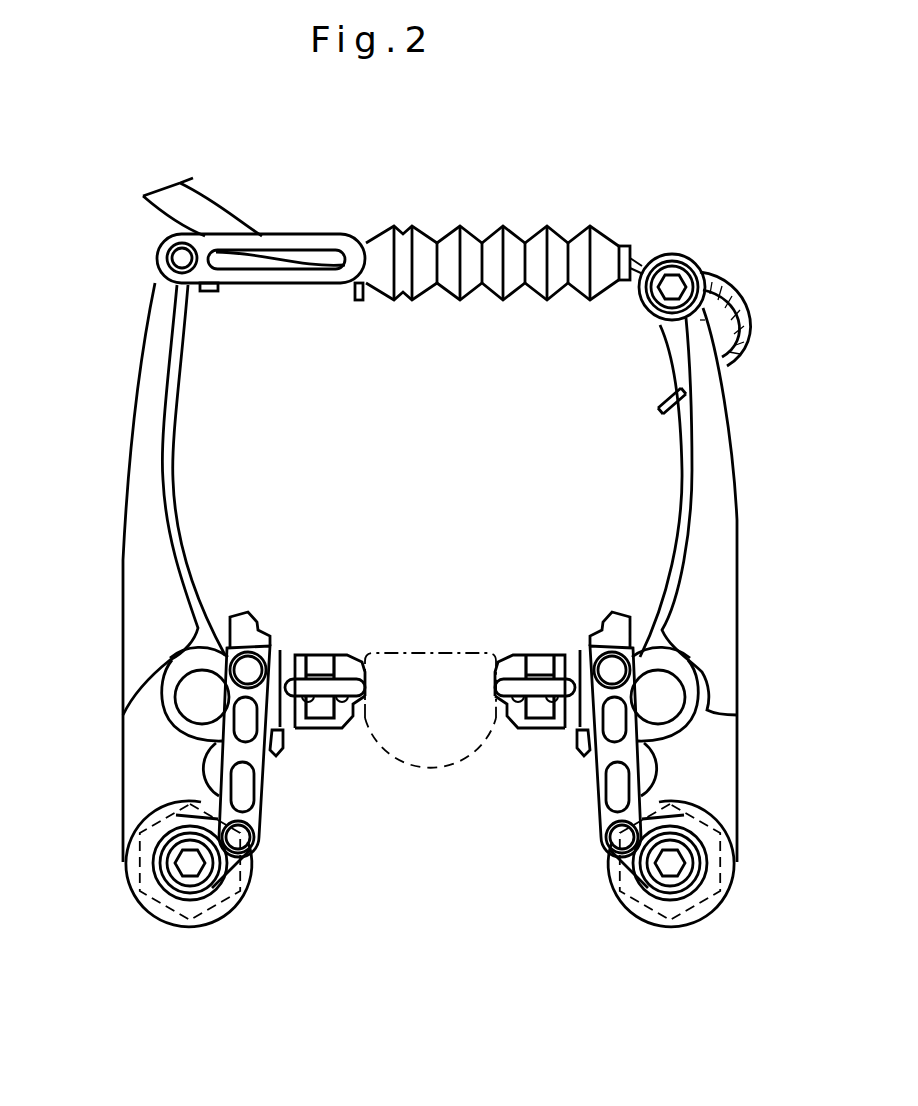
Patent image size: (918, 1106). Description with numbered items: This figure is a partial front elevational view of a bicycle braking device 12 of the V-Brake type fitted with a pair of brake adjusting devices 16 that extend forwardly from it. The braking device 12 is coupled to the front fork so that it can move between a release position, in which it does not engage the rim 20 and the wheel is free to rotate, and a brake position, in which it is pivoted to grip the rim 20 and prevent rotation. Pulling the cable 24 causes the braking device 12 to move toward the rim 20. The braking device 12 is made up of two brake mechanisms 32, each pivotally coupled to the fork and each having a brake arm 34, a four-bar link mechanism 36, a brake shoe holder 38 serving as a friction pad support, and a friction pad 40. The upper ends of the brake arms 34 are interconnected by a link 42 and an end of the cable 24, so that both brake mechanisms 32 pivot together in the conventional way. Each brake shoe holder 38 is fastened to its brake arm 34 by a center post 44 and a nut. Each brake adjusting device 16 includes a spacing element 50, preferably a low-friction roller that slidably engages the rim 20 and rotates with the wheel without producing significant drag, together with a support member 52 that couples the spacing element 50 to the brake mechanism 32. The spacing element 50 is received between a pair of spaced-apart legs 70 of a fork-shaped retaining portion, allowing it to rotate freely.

The braking device 12 is at (731, 236).
The brake adjusting device 16 is at (489, 688).
The rim 20 is at (473, 652).
The cable 24 is at (643, 258).
The brake mechanism 32 is at (113, 733).
The brake arm 34 is at (188, 546).
The four-bar link mechanism 36 is at (218, 770).
The brake shoe holder 38 is at (300, 732).
The friction pad 40 is at (346, 726).
The link 42 is at (250, 286).
The center post 44 is at (288, 735).
The spacing element 50 is at (320, 668).
The support member 52 is at (322, 732).
The legs 70 is at (524, 706).